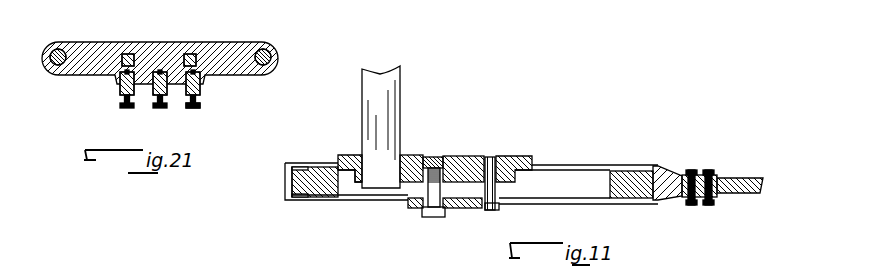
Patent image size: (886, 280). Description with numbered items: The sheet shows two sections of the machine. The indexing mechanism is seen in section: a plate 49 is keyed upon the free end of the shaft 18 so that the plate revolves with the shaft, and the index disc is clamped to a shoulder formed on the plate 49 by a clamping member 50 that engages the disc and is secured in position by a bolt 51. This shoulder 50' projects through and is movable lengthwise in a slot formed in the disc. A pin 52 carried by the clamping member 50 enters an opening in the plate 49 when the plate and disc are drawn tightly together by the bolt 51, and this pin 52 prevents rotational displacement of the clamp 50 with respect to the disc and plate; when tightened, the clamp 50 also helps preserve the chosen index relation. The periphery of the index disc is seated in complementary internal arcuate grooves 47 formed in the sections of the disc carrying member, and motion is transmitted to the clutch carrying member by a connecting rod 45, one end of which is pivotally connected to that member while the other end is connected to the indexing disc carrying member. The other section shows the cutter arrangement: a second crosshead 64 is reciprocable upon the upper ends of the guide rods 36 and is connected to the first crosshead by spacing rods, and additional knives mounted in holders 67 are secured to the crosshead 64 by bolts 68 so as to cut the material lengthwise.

In FIG. 21, the guide rods 36 is at (285, 36).
In FIG. 21, the second crosshead 64 is at (208, 42).
In FIG. 21, the holders 67 is at (200, 90).
In FIG. 21, the bolts 68 is at (200, 106).
In FIG. 11, the shaft 18 is at (400, 89).
In FIG. 11, the plate 49 is at (472, 157).
In FIG. 11, the clamping member 50 is at (445, 194).
In FIG. 11, the shoulder 50' is at (533, 183).
In FIG. 11, the bolt 51 is at (420, 214).
In FIG. 11, the pin 52 is at (500, 207).
In FIG. 11, the internal arcuate grooves 47 is at (300, 200).
In FIG. 11, the connecting rod 45 is at (730, 193).